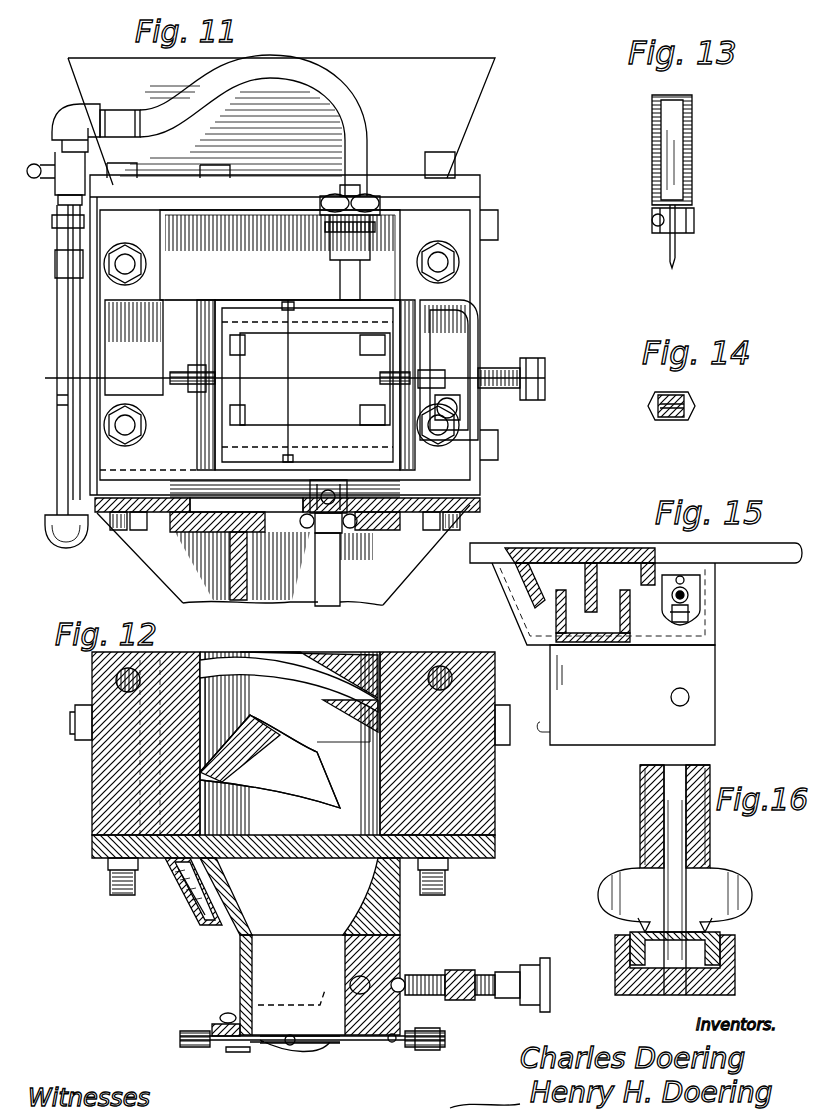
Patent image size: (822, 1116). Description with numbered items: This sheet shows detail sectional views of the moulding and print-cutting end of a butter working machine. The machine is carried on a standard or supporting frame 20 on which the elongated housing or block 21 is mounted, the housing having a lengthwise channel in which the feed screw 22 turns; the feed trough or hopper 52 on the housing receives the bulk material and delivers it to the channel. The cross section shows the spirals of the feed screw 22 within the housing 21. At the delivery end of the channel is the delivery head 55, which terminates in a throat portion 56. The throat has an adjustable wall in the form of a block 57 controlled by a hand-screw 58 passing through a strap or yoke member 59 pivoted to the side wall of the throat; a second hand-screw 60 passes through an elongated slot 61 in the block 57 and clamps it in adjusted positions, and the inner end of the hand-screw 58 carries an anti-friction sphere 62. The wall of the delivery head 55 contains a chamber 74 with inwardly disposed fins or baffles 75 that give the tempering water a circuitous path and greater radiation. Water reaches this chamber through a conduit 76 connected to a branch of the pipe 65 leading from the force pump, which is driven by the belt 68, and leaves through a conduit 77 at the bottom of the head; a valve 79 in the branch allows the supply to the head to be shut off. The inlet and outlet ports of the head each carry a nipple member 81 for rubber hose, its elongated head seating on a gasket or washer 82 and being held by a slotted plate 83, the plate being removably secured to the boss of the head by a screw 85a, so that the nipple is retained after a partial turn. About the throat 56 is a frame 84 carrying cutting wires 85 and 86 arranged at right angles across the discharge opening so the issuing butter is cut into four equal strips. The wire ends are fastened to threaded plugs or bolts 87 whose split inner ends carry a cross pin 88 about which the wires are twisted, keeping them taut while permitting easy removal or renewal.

In FIG. 11, the standard or supporting frame 20 is at (240, 598).
In FIG. 11, the elongated housing or block 21 is at (482, 300).
In FIG. 12, the elongated housing or block 21 is at (490, 838).
In FIG. 12, the feed screw 22 is at (318, 652).
In FIG. 11, the feed trough or hopper 52 is at (496, 66).
In FIG. 11, the delivery head 55 is at (232, 268).
In FIG. 12, the delivery head 55 is at (401, 905).
In FIG. 15, the delivery head 55 is at (505, 603).
In FIG. 16, the delivery head 55 is at (738, 990).
In FIG. 12, the throat portion 56 is at (238, 963).
In FIG. 15, the throat portion 56 is at (548, 688).
In FIG. 11, the block 57 is at (400, 362).
In FIG. 12, the block 57 is at (400, 960).
In FIG. 11, the hand-screw 58 is at (507, 368).
In FIG. 12, the hand-screw 58 is at (515, 975).
In FIG. 11, the strap or yoke member 59 is at (460, 342).
In FIG. 12, the strap or yoke member 59 is at (455, 972).
In FIG. 11, the hand-screw 60 is at (393, 228).
In FIG. 12, the hand-screw 60 is at (345, 1046).
In FIG. 12, the elongated slot 61 is at (350, 980).
In FIG. 12, the anti-friction portion or sphere 62 is at (404, 980).
In FIG. 11, the pipe 65 is at (57, 308).
In FIG. 12, the belt 68 is at (238, 1050).
In FIG. 12, the chamber 74 is at (205, 930).
In FIG. 15, the chamber 74 is at (582, 620).
In FIG. 12, the fins or baffles 75 is at (198, 905).
In FIG. 15, the fins or baffles 75 is at (598, 580).
In FIG. 11, the conduit 76 is at (368, 118).
In FIG. 11, the conduit 77 is at (342, 598).
In FIG. 11, the valve 79 is at (52, 150).
In FIG. 11, the nipple member 81 is at (358, 196).
In FIG. 15, the nipple member 81 is at (690, 608).
In FIG. 16, the nipple member 81 is at (710, 870).
In FIG. 16, the gaskets or washers 82 is at (708, 965).
In FIG. 11, the plates 83 is at (350, 200).
In FIG. 15, the plates 83 is at (690, 578).
In FIG. 11, the frame 84 is at (196, 448).
In FIG. 12, the frame 84 is at (212, 1026).
In FIG. 11, the cutting wire 85 is at (292, 356).
In FIG. 12, the cutting wire 85 is at (290, 1046).
In FIG. 13, the cutting wire 85 is at (676, 258).
In FIG. 15, the needle opening 85a is at (680, 585).
In FIG. 11, the cutting wire 86 is at (288, 380).
In FIG. 12, the cutting wire 86 is at (265, 1044).
In FIG. 11, the threaded plugs or bolts 87 is at (290, 300).
In FIG. 12, the threaded plugs or bolts 87 is at (186, 1040).
In FIG. 13, the threaded plugs or bolts 87 is at (694, 182).
In FIG. 14, the threaded plugs or bolts 87 is at (690, 412).
In FIG. 16, the threaded plugs or bolts 87 is at (712, 930).
In FIG. 12, the cross pin 88 is at (392, 1042).
In FIG. 13, the cross pin 88 is at (660, 234).
In FIG. 14, the cross pin 88 is at (696, 402).